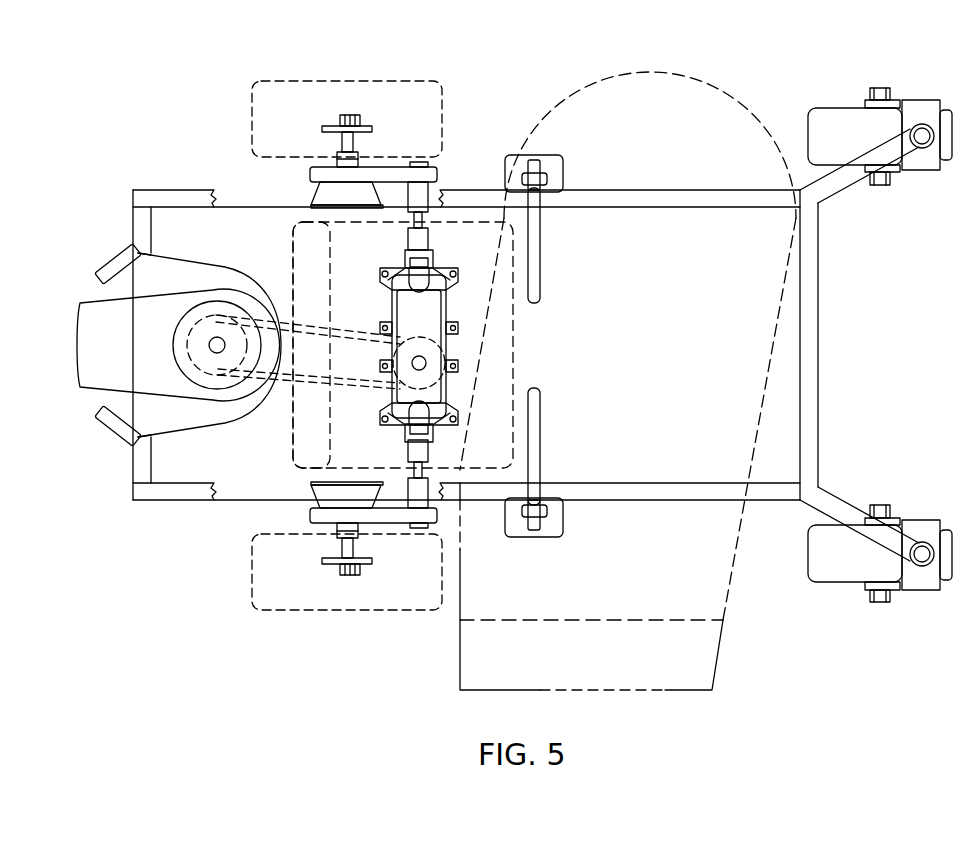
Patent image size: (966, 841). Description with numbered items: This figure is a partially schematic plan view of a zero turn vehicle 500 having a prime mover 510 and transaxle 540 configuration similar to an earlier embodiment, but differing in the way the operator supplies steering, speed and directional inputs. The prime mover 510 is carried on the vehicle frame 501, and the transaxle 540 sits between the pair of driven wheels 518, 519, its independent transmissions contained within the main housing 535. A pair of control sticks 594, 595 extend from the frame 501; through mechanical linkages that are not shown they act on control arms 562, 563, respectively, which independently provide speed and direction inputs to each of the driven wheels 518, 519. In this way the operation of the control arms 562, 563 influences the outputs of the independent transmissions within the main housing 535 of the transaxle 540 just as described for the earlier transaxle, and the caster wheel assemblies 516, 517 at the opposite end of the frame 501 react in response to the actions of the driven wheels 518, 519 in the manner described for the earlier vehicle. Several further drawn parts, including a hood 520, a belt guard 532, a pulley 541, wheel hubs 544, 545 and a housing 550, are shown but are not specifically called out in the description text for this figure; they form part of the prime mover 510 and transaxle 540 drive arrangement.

The vehicle 500 is at (60, 60).
The vehicle frame 501 is at (650, 190).
The prime mover 510 is at (140, 356).
The caster wheel assembly 516 is at (840, 108).
The caster wheel assembly 517 is at (840, 583).
The driven wheel 518 is at (252, 100).
The driven wheel 519 is at (252, 590).
The hood 520 is at (594, 80).
The belt guard 532 is at (290, 300).
The main housing 535 is at (386, 297).
The transaxle 540 is at (358, 406).
The drive pulley 541 is at (421, 362).
The wheel hub 544 is at (310, 176).
The wheel hub 545 is at (312, 500).
The transaxle housing 550 is at (392, 348).
The control arm 562 is at (409, 264).
The control arm 563 is at (409, 428).
The control stick 594 is at (542, 245).
The control stick 595 is at (542, 430).